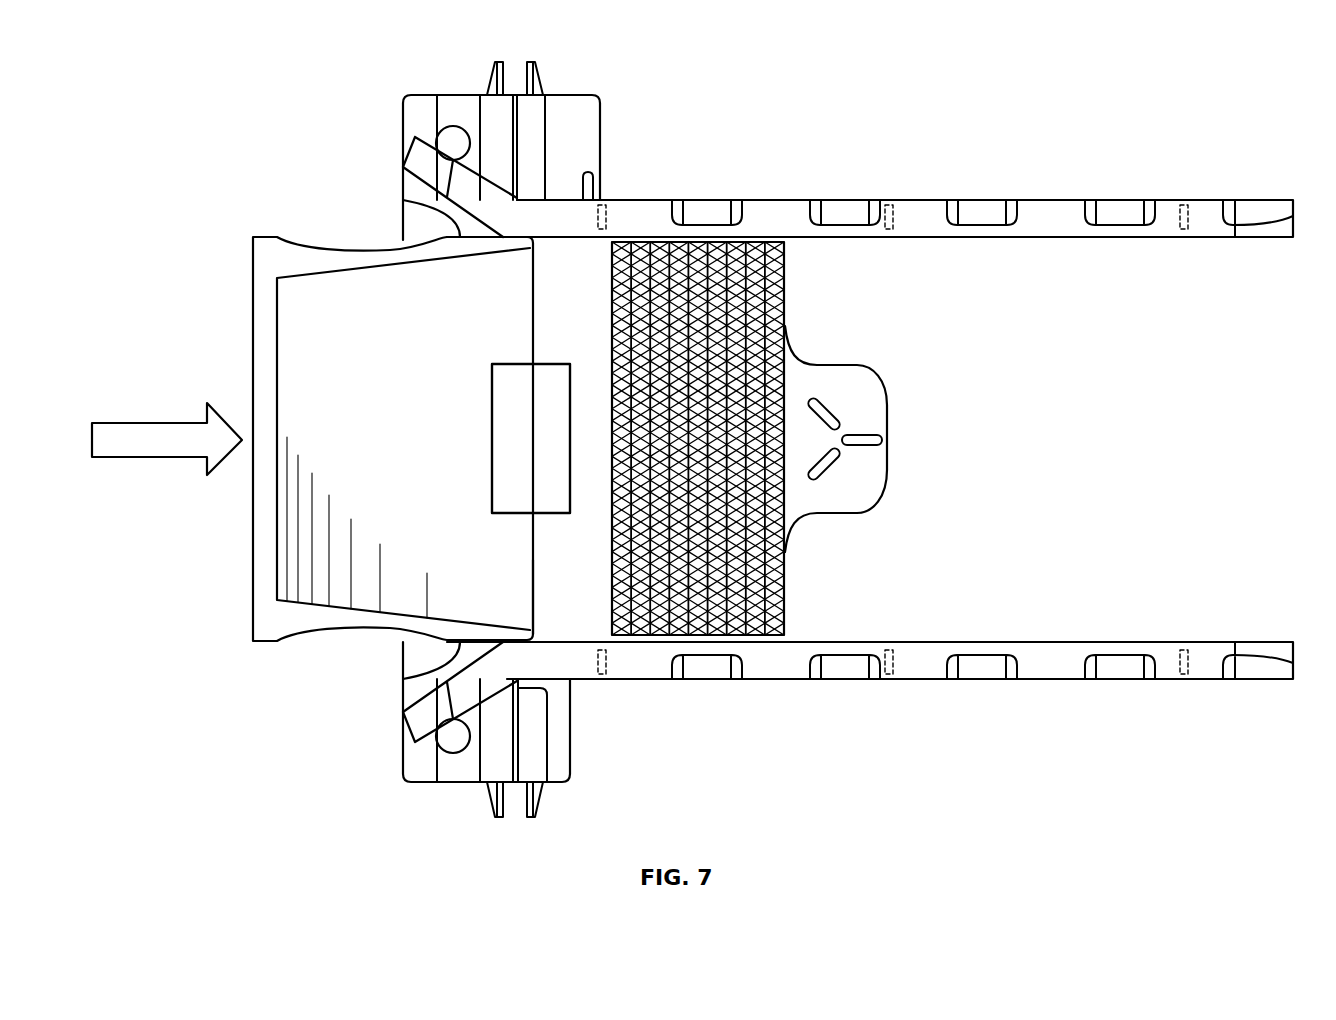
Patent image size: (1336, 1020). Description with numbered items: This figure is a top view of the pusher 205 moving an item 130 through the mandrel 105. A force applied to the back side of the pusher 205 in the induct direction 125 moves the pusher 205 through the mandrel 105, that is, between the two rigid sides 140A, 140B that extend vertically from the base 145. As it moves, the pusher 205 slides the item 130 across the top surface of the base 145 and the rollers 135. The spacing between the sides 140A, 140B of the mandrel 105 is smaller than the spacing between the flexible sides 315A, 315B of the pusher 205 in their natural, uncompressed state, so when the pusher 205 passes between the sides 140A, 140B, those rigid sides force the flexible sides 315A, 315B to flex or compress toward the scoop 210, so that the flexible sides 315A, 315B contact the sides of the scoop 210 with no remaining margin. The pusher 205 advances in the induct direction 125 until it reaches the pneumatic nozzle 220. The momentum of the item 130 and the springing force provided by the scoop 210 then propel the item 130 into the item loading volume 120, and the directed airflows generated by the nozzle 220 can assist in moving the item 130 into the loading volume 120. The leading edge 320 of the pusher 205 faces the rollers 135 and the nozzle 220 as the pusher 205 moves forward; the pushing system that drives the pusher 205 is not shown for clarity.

The mandrel 105 is at (792, 452).
The item loading volume 120 is at (1107, 412).
The induct direction 125 is at (165, 423).
The item 130 is at (552, 363).
The rollers 135 is at (753, 302).
The side 140A is at (1050, 200).
The side 140B is at (1057, 680).
The base 145 is at (400, 670).
The pusher 205 is at (398, 465).
The scoop 210 is at (340, 414).
The pneumatic nozzle 220 is at (862, 495).
The flexible side 315A is at (403, 698).
The flexible side 315B is at (403, 200).
The leading edge 320 is at (535, 592).